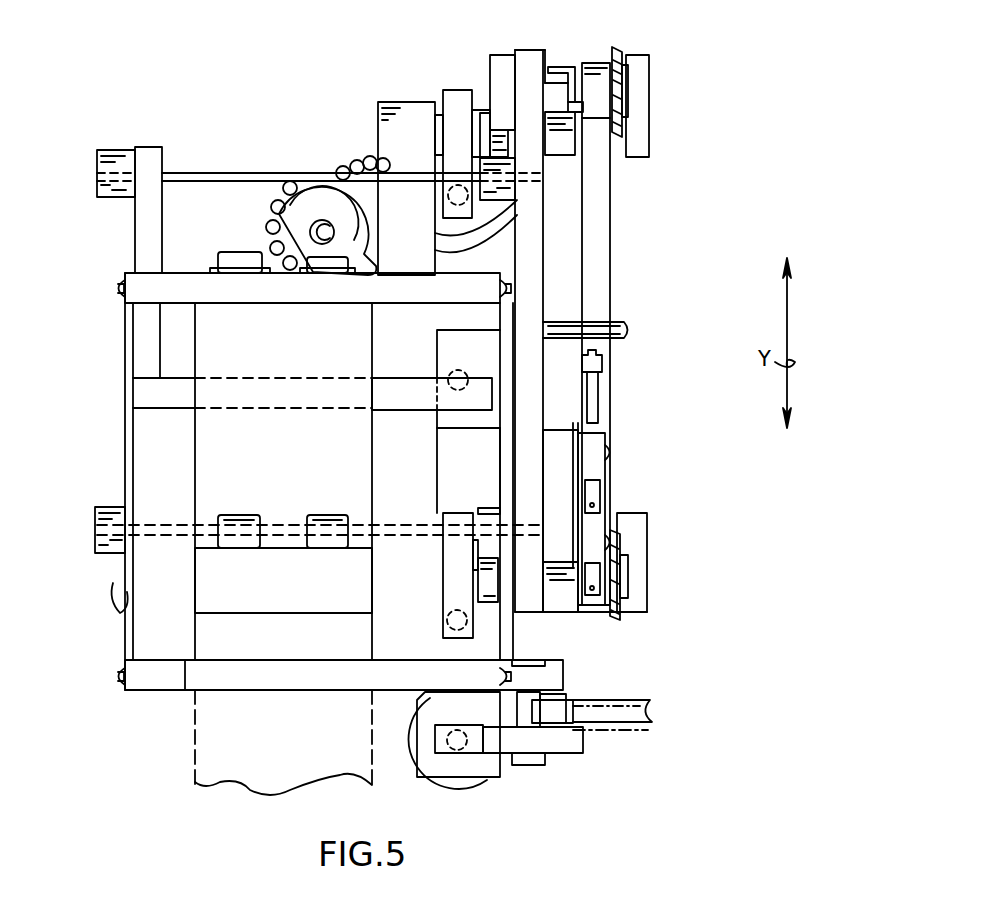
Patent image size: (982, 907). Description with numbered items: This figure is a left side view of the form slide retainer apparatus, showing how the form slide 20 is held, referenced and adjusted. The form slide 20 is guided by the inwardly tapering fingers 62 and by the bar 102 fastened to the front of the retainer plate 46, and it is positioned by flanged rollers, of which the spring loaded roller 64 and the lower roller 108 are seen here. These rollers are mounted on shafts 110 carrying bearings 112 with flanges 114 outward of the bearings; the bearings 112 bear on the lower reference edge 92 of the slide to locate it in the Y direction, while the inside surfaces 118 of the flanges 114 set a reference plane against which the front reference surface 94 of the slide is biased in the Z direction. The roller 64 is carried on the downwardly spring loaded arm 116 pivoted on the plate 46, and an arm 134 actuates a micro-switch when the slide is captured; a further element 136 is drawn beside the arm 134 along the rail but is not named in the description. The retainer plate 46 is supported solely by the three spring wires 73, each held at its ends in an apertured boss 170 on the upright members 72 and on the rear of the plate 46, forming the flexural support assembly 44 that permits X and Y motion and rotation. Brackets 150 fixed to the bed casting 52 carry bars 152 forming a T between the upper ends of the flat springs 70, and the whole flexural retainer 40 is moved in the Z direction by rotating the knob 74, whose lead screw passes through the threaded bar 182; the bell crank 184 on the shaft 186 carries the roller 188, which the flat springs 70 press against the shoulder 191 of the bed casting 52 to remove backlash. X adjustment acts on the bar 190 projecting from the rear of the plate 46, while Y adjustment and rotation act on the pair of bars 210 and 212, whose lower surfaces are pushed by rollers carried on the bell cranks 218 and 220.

The form slide 20 is at (593, 262).
The flexural retainer 40 is at (338, 120).
The flexural support assembly 44 is at (268, 156).
The retainer plate 46 is at (481, 77).
The bed casting 52 is at (215, 755).
The fingers 62 is at (645, 135).
The flanged roller 64 is at (622, 95).
The flat springs 70 is at (126, 335).
The upright members 72 is at (150, 147).
The spring wires 73 is at (222, 181).
The knob 74 is at (450, 785).
The edge 92 is at (592, 545).
The front reference surface 94 is at (612, 226).
The bar 102 is at (634, 538).
The flanged bearing 108 is at (620, 572).
The shafts 110 is at (600, 110).
The bearings 112 is at (590, 63).
The flanges 114 is at (617, 50).
The spring loaded arm 116 is at (560, 67).
The inside surfaces 118 is at (628, 80).
The arm 134 is at (592, 364).
The pin 136 is at (620, 328).
The brackets 150 is at (198, 584).
The bars 152 is at (220, 298).
The apertured boss 170 is at (97, 152).
The threaded bar 182 is at (470, 768).
The bell crank 184 is at (580, 745).
The shaft 186 is at (520, 708).
The roller 188 is at (568, 700).
The bar 190 is at (443, 355).
The shoulder 191 is at (635, 730).
The bar 210 is at (500, 60).
The bar 212 is at (470, 545).
The bell crank 218 is at (455, 92).
The bell crank 220 is at (458, 520).